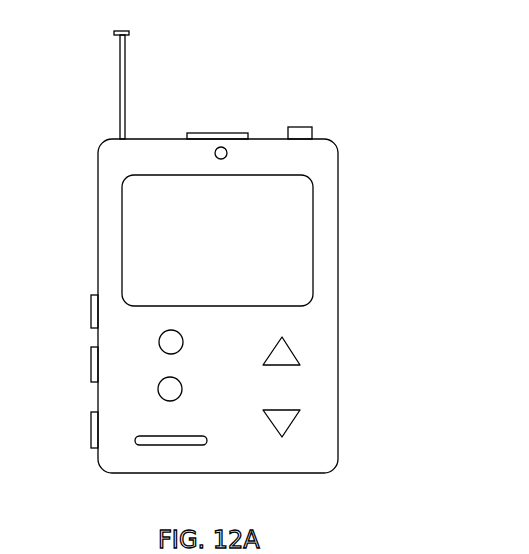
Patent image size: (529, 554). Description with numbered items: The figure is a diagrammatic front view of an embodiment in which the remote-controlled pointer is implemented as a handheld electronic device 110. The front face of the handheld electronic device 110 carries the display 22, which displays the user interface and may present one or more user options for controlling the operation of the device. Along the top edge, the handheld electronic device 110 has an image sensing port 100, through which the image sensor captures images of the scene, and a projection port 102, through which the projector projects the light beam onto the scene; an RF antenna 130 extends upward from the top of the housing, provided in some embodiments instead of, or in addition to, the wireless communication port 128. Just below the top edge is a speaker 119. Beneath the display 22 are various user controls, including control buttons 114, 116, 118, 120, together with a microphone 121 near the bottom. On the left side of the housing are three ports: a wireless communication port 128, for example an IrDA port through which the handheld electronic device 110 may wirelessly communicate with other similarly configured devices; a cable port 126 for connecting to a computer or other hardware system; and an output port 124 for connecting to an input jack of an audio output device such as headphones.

The handheld electronic device 110 is at (449, 168).
The display 22 is at (229, 251).
The RF antenna 130 is at (123, 67).
The image sensing port 100 is at (218, 132).
The projection port 102 is at (302, 126).
The speaker 119 is at (214, 153).
The wireless communication port 128 is at (90, 309).
The cable port 126 is at (90, 364).
The output port 124 is at (90, 429).
The control button 114 is at (159, 338).
The control button 116 is at (183, 387).
The control button 118 is at (270, 348).
The control button 120 is at (280, 408).
The microphone 121 is at (208, 440).